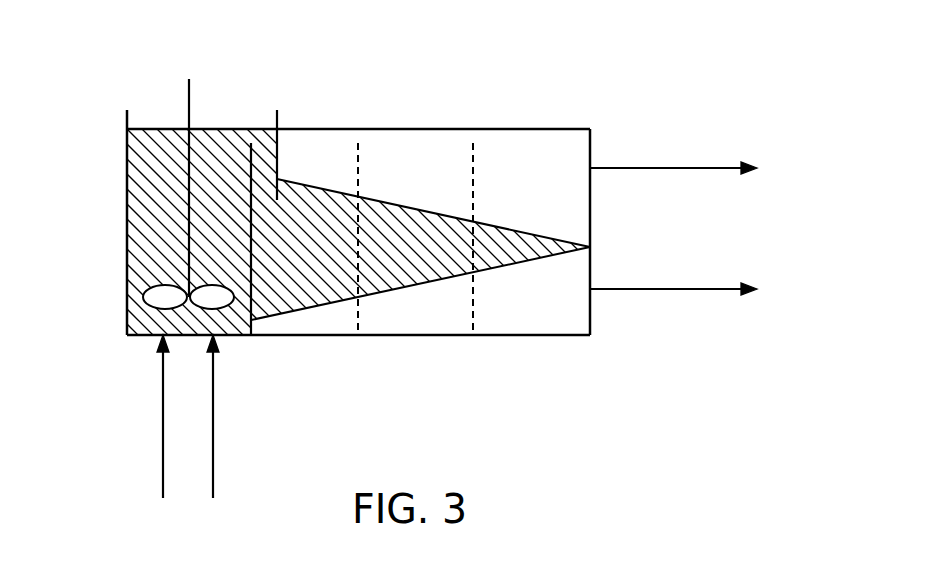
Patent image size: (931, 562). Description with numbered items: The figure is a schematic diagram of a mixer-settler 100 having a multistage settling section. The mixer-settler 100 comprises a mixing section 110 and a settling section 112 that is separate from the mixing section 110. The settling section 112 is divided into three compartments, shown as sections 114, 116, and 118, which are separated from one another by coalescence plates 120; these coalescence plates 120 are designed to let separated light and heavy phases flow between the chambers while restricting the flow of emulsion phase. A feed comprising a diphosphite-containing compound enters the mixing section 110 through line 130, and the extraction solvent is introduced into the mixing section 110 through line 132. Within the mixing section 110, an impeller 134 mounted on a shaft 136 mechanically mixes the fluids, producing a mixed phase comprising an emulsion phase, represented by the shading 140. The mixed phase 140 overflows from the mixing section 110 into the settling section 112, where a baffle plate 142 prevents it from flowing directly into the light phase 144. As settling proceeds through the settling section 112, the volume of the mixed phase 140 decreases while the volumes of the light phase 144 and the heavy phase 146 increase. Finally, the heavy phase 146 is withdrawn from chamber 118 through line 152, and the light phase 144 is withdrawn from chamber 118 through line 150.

The mixer-settler 100 is at (405, 62).
The mixing section 110 is at (127, 185).
The settling section 112 is at (425, 336).
The first settling section compartment 114 is at (307, 128).
The second settling section compartment 116 is at (425, 128).
The third settling section compartment 118 is at (539, 128).
The coalescence plates 120 is at (473, 173).
The feed line 130 is at (163, 415).
The extraction solvent line 132 is at (214, 457).
The impeller 134 is at (143, 297).
The shaft 136 is at (189, 82).
The mixed phase 140 is at (239, 142).
The baffle plate 142 is at (277, 150).
The light phase 144 is at (554, 196).
The heavy phase 146 is at (554, 304).
The light phase removal line 150 is at (705, 165).
The heavy phase removal line 152 is at (707, 288).